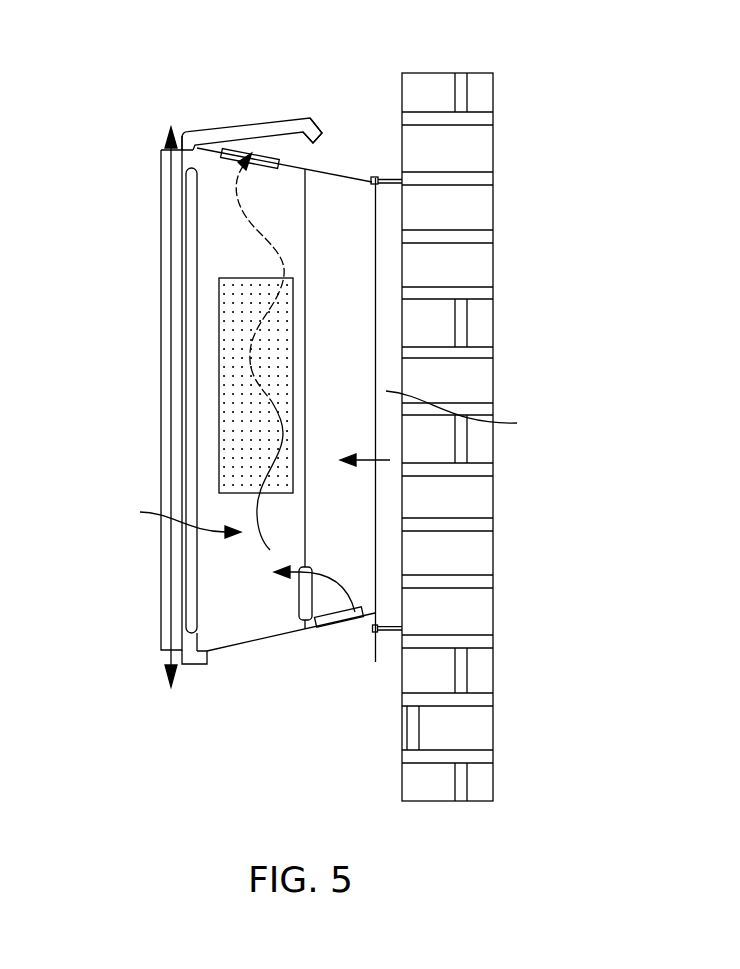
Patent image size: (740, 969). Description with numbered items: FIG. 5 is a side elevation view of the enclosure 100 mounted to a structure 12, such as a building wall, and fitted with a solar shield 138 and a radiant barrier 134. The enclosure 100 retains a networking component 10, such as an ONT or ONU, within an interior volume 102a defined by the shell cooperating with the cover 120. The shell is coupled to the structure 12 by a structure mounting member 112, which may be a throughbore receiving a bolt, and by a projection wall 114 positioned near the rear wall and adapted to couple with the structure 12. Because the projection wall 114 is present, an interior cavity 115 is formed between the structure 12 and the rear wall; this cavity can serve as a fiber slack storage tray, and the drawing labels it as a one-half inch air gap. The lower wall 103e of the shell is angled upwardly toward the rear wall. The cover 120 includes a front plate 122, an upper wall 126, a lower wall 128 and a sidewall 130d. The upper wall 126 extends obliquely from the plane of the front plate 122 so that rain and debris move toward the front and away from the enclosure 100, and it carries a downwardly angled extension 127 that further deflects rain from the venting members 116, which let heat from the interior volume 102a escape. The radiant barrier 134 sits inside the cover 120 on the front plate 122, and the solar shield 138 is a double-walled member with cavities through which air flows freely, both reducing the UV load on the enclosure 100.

The enclosure 100 is at (92, 75).
The cover 120 is at (167, 137).
The panel 130d is at (185, 148).
The front plate 122 is at (192, 193).
The upper wall 126 is at (235, 126).
The extension 127 is at (320, 123).
The venting member 116 is at (253, 150).
The projection wall 114 is at (357, 177).
The structure mounting member 112 is at (378, 180).
The structure 12 is at (487, 352).
The interior cavity 115 is at (390, 460).
The networking component 10 is at (238, 403).
The interior volume 102a is at (158, 520).
The solar shield 138 is at (170, 570).
The radiant barrier 134 is at (198, 624).
The lower wall 128 is at (196, 664).
The lower wall 103e is at (290, 636).